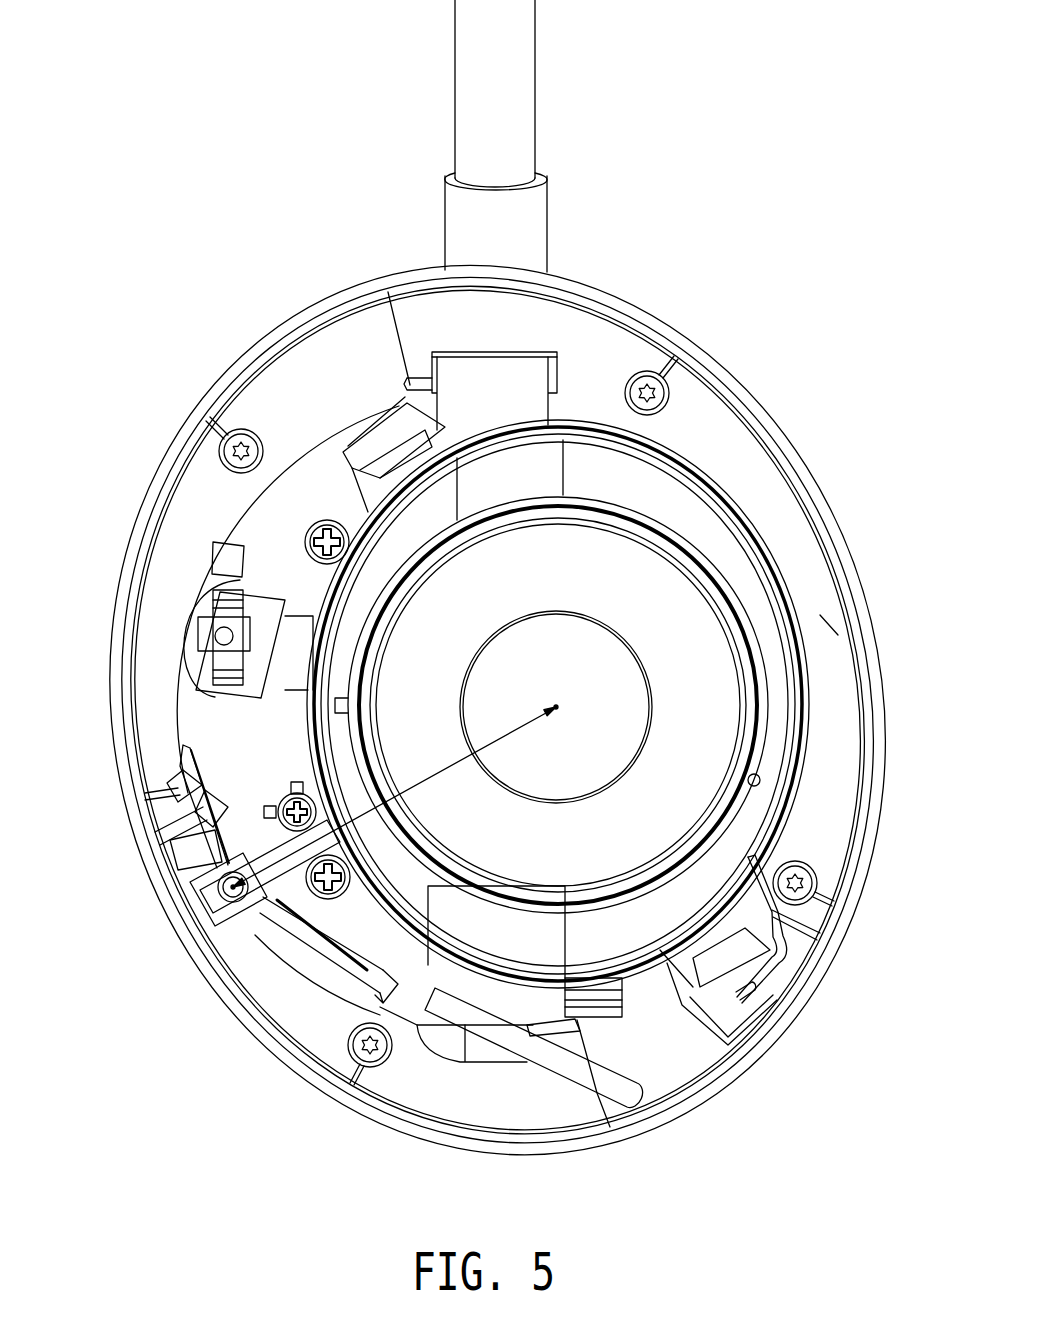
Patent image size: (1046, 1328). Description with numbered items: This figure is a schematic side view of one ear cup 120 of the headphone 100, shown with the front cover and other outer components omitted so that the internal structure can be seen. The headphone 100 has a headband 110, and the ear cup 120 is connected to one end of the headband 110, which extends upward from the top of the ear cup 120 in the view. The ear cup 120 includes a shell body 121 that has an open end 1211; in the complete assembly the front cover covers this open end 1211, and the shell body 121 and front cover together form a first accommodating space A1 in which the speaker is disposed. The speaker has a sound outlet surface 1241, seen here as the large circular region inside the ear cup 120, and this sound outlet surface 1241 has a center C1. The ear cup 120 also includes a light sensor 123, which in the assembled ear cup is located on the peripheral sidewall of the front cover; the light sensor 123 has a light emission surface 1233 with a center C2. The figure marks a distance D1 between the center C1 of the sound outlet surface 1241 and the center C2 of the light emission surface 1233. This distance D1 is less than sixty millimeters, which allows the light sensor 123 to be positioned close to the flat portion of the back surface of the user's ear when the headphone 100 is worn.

The headphone 100 is at (930, 1150).
The headband 110 is at (535, 75).
The ear cup 120 is at (788, 332).
The shell body 121 is at (672, 338).
The open end 1211 is at (635, 322).
The sound outlet surface 1241 is at (632, 585).
The light sensor 123 is at (225, 900).
The light emission surface 1233 is at (218, 882).
The first accommodating space A1 is at (322, 490).
The center of the sound outlet surface C1 is at (556, 707).
The center of the light emission surface C2 is at (231, 900).
The distance D1 is at (394, 797).